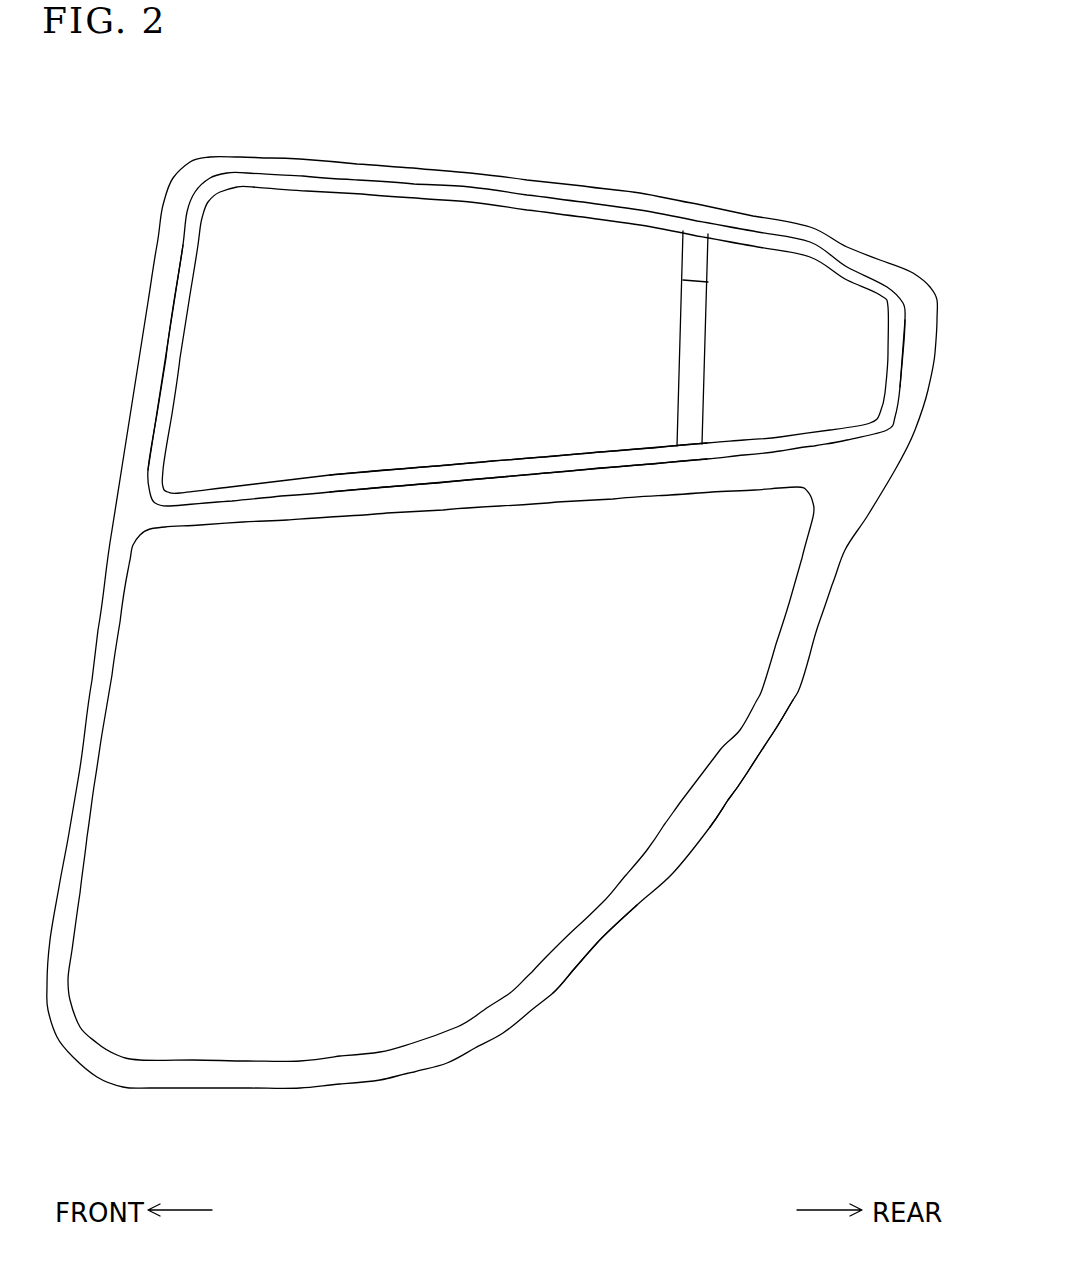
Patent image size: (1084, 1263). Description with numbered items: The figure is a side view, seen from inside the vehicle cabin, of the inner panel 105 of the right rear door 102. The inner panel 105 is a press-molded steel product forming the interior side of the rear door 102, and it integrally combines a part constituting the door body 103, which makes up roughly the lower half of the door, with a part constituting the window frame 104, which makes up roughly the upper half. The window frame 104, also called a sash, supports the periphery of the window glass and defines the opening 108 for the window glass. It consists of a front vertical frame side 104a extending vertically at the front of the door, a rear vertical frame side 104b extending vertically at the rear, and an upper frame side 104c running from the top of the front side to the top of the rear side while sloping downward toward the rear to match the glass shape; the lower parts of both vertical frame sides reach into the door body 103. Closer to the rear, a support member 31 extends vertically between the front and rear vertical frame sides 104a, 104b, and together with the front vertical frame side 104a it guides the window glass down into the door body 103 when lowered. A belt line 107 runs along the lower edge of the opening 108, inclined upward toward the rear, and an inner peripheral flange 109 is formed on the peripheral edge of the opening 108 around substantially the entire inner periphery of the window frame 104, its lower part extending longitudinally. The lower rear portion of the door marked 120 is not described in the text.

The rear door 102 is at (750, 957).
The door body 103 is at (770, 687).
The window frame 104 is at (525, 176).
The front vertical frame side 104a is at (162, 218).
The rear vertical frame side 104b is at (939, 333).
The upper frame side 104c is at (728, 205).
The support member 31 is at (710, 290).
The inner panel 105 is at (682, 798).
The belt line 107 is at (563, 457).
The opening for the window glass 108 is at (570, 229).
The inner peripheral flange 109 is at (390, 478).
The lower rear portion of door 120 is at (553, 910).